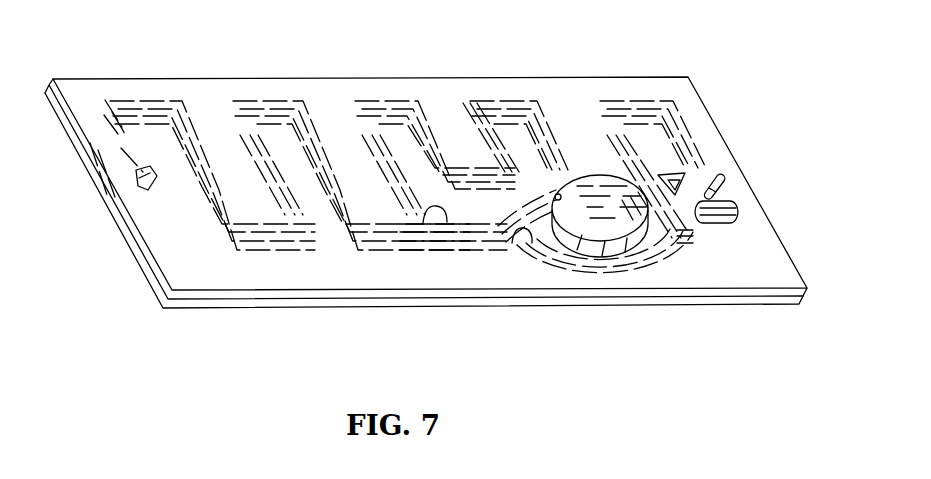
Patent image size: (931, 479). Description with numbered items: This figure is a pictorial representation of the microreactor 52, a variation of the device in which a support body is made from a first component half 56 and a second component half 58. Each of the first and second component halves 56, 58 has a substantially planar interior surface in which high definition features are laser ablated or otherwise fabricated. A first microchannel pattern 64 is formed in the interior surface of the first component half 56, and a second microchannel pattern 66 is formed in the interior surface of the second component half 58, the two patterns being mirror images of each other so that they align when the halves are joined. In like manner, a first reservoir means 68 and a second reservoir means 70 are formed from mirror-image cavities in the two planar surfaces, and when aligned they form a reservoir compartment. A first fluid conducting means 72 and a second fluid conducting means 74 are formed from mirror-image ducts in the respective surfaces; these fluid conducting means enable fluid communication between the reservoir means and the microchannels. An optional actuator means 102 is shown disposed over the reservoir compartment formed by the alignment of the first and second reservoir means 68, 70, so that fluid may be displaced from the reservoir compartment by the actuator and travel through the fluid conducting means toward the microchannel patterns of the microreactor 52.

The microreactor 52 is at (780, 105).
The first component half 56 is at (252, 308).
The second component half 58 is at (177, 260).
The first microchannel pattern 64 is at (510, 117).
The second microchannel pattern 66 is at (522, 98).
The first reservoir means 68 is at (536, 262).
The second reservoir means 70 is at (556, 194).
The first fluid conducting means 72 is at (447, 248).
The second fluid conducting means 74 is at (412, 225).
The actuator means 102 is at (617, 230).